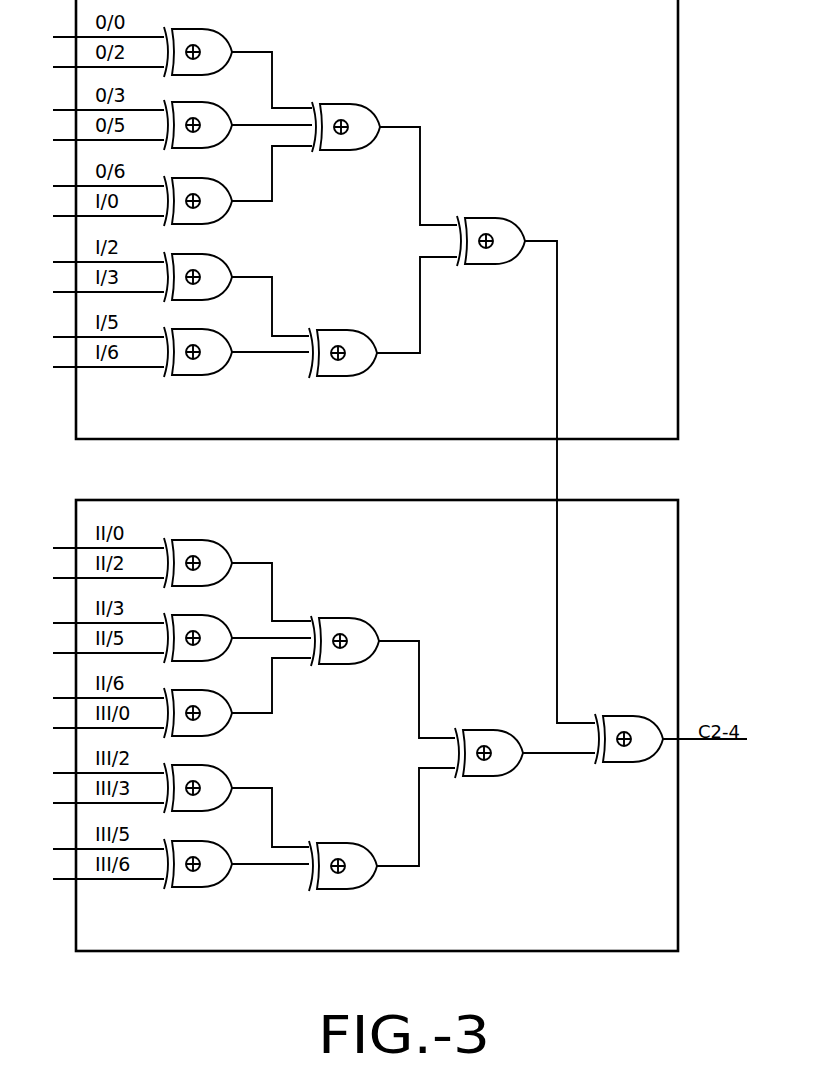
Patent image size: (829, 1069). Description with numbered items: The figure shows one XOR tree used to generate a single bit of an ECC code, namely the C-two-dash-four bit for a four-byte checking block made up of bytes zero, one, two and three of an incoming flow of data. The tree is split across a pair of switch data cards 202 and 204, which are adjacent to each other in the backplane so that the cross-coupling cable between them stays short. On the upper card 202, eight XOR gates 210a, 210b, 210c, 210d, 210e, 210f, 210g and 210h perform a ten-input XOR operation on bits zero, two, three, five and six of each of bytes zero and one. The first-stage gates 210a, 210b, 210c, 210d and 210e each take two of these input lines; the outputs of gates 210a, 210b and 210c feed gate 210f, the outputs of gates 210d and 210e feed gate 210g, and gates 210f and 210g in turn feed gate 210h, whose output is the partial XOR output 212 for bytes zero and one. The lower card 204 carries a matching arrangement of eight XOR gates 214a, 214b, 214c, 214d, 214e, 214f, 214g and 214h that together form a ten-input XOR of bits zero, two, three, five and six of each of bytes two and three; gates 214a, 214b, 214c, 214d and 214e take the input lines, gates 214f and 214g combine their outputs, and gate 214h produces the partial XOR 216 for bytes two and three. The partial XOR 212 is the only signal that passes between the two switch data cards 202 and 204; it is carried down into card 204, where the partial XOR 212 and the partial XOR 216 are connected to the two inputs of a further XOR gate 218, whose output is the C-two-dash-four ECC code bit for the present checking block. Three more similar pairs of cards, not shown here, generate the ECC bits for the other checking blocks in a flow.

The switch data card 202 is at (637, 70).
The switch data card 204 is at (632, 584).
The XOR gate 210a is at (201, 33).
The XOR gate 210b is at (191, 109).
The XOR gate 210c is at (190, 186).
The XOR gate 210d is at (202, 262).
The XOR gate 210e is at (190, 336).
The XOR gate 210f is at (345, 110).
The XOR gate 210g is at (330, 333).
The XOR gate 210h is at (483, 224).
The partial XOR output 212 is at (557, 348).
The XOR gate 214a is at (201, 549).
The XOR gate 214b is at (191, 621).
The XOR gate 214c is at (187, 698).
The XOR gate 214d is at (192, 774).
The XOR gate 214e is at (192, 846).
The XOR gate 214f is at (339, 621).
The XOR gate 214g is at (333, 846).
The XOR gate 214h is at (473, 736).
The partial XOR 216 is at (566, 755).
The XOR gate 218 is at (640, 717).